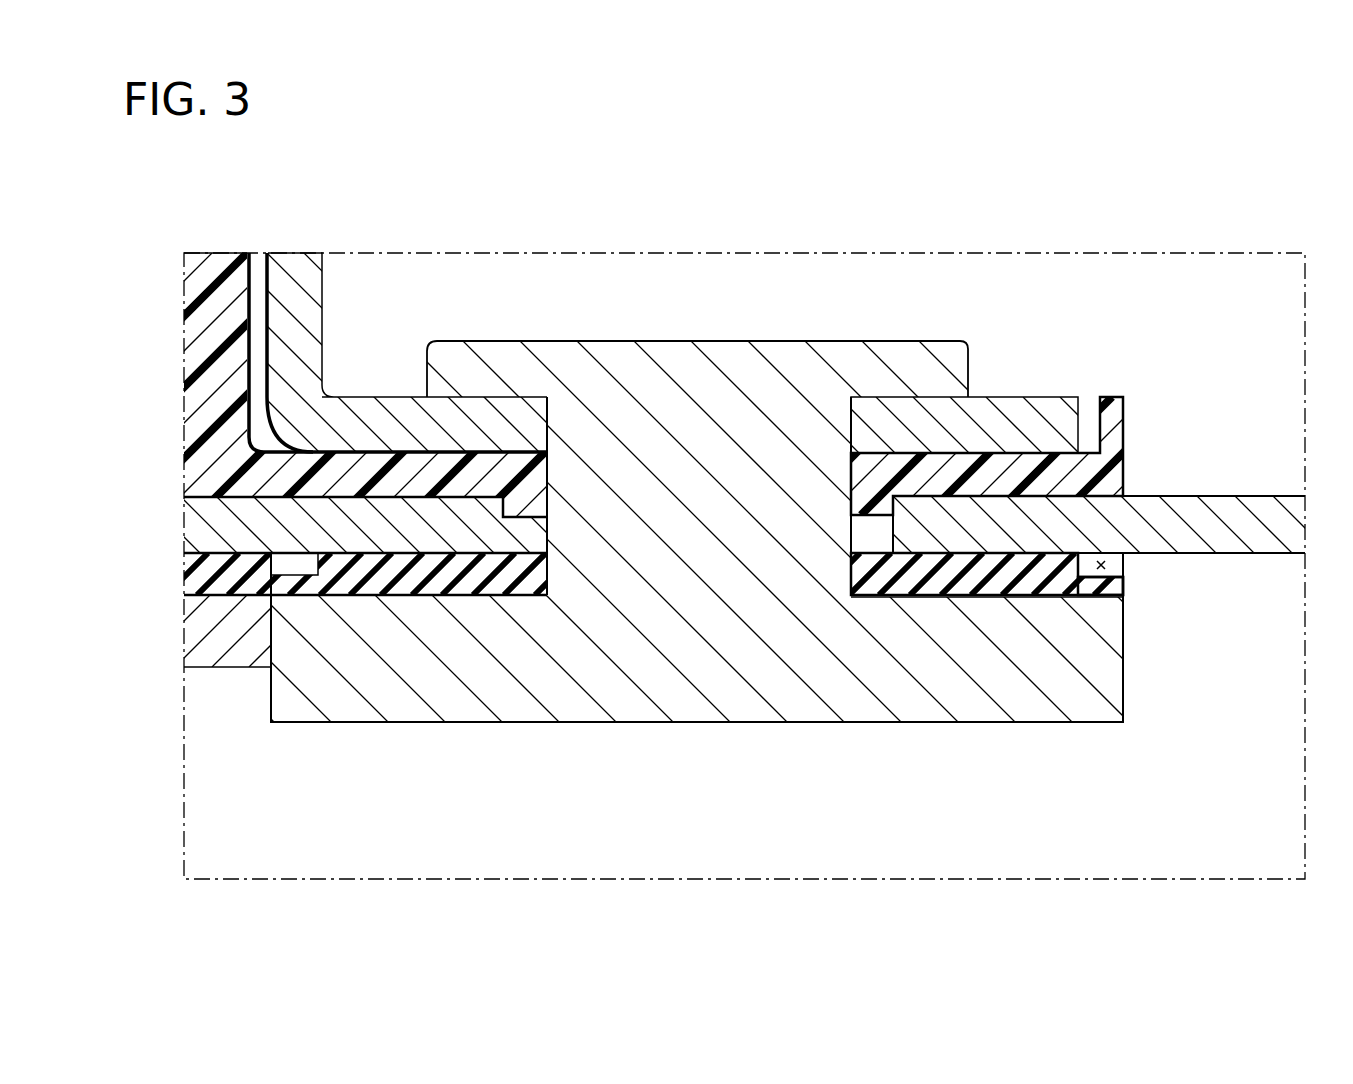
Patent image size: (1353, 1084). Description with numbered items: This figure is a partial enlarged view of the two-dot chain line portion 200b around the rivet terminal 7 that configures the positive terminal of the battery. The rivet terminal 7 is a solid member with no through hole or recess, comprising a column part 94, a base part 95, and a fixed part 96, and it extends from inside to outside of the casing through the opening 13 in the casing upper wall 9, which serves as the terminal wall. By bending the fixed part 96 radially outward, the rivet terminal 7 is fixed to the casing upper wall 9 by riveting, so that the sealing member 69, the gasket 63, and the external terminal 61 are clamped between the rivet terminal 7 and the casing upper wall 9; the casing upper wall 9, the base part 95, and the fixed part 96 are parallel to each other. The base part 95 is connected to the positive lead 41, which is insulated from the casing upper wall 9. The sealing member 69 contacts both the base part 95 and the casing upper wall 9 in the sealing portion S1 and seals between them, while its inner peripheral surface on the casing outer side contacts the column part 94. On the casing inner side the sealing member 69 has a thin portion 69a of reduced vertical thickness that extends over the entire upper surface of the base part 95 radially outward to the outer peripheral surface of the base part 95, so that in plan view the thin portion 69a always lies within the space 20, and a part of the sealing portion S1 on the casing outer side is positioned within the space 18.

The rivet terminal 7 is at (902, 205).
The column part 94 is at (818, 490).
The base part 95 is at (818, 668).
The fixed part 96 is at (888, 362).
The casing upper wall 9 is at (1200, 507).
The opening 13 is at (519, 514).
The space 18 is at (467, 568).
The space 20 is at (1093, 580).
The positive lead 41 is at (208, 645).
The external terminal 61 is at (315, 315).
The gasket 63 is at (408, 460).
The sealing member 69 is at (1035, 587).
The thin portion 69a is at (1115, 597).
The two-dot chain line portion 200b is at (253, 272).
The sealing portion S1 is at (970, 597).